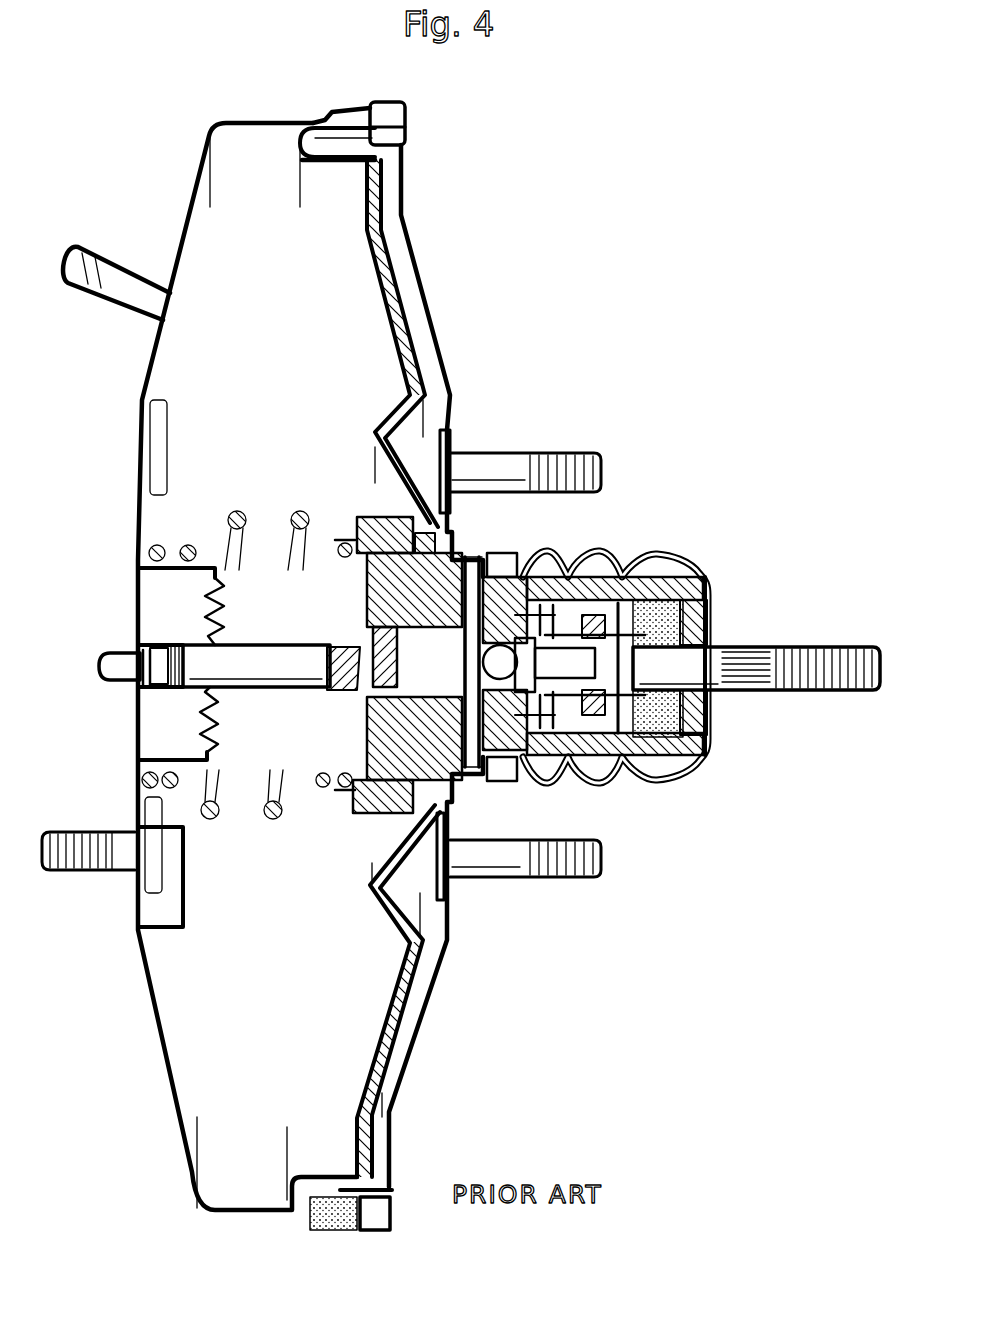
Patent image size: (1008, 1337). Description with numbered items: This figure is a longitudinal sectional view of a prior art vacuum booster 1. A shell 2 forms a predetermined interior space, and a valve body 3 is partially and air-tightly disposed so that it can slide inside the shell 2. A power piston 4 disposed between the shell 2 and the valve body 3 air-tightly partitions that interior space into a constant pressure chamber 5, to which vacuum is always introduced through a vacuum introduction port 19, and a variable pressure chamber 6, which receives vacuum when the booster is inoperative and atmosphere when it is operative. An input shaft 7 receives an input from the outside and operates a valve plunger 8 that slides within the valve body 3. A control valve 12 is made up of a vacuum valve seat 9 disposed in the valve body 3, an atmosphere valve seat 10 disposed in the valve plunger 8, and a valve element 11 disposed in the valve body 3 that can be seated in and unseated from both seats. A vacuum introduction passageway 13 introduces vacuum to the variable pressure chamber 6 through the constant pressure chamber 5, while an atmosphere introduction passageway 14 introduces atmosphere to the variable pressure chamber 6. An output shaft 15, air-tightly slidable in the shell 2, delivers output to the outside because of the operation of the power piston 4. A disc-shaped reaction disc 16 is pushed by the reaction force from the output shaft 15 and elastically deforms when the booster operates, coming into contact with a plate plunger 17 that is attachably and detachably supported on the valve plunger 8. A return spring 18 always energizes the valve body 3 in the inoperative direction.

The vacuum booster 1 is at (461, 666).
The shell 2 is at (172, 1078).
The valve body 3 is at (357, 826).
The power piston 4 is at (407, 997).
The constant pressure chamber 5 is at (281, 1008).
The variable pressure chamber 6 is at (396, 898).
The input shaft 7 is at (812, 692).
The valve plunger 8 is at (532, 649).
The vacuum valve seat 9 is at (503, 553).
The atmosphere valve seat 10 is at (539, 665).
The valve element 11 is at (609, 558).
The control valve 12 is at (571, 568).
The vacuum introduction passageway 13 is at (365, 587).
The atmosphere introduction passageway 14 is at (683, 631).
The output shaft 15 is at (263, 693).
The reaction disc 16 is at (362, 707).
The plate plunger 17 is at (414, 738).
The return spring 18 is at (249, 510).
The vacuum introduction port 19 is at (121, 291).